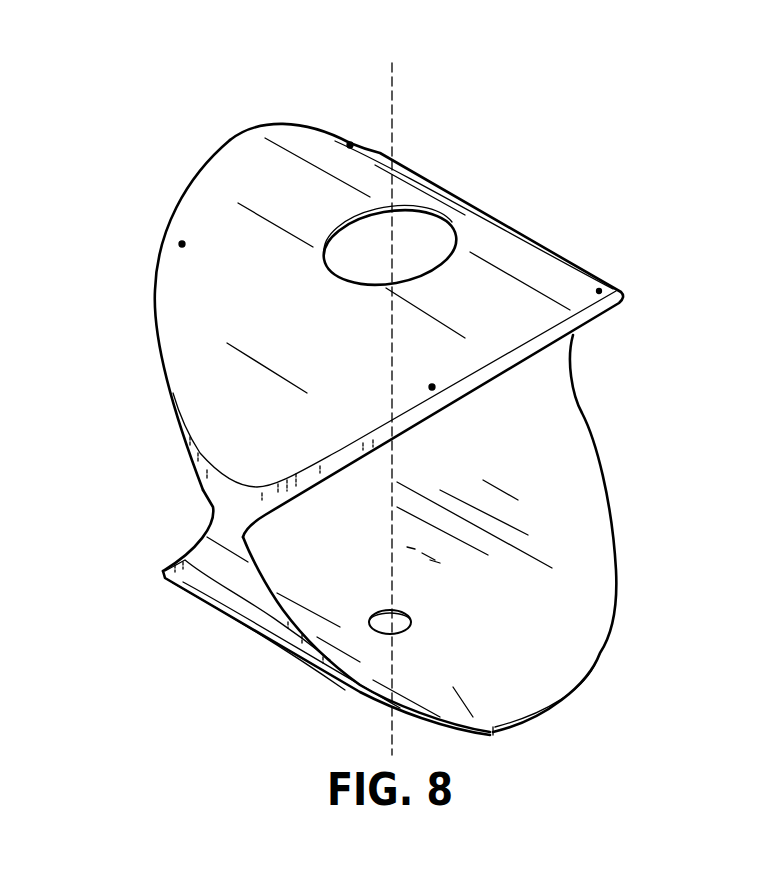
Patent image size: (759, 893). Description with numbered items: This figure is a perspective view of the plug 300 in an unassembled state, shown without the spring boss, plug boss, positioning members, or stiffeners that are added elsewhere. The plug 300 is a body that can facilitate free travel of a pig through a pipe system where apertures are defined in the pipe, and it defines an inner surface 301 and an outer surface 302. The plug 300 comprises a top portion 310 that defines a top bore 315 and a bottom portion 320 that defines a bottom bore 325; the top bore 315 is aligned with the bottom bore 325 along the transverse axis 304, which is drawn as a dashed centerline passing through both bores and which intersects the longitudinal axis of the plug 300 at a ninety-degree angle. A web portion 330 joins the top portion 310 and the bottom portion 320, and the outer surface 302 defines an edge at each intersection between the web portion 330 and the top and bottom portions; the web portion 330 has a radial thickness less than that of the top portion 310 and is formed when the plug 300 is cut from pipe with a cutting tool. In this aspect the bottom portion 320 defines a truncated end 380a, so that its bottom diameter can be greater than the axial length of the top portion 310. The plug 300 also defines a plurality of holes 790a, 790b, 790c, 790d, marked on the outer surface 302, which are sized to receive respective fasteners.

The plug 300 is at (493, 101).
The inner surface 301 is at (573, 648).
The outer surface 302 is at (237, 172).
The transverse axis 304 is at (393, 103).
The top portion 310 is at (193, 373).
The top bore 315 is at (404, 212).
The bottom portion 320 is at (225, 617).
The bottom bore 325 is at (380, 608).
The web portion 330 is at (215, 513).
The truncated end 380a is at (553, 710).
The hole 790a is at (432, 387).
The hole 790b is at (182, 244).
The hole 790c is at (350, 145).
The hole 790d is at (599, 291).